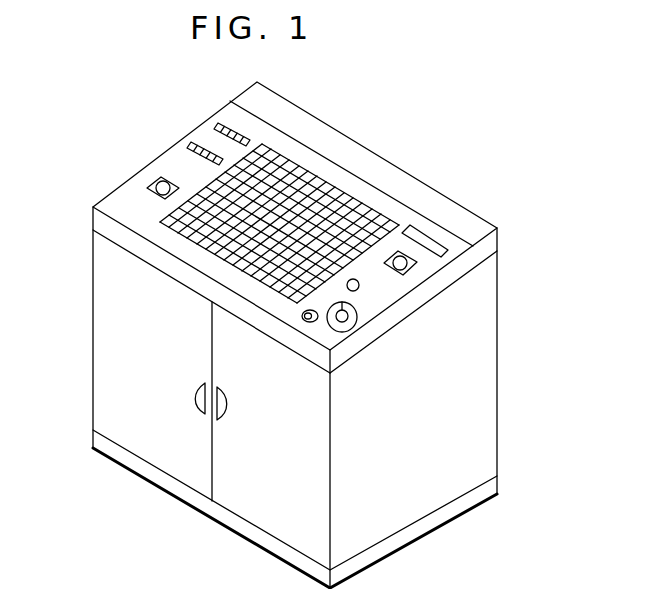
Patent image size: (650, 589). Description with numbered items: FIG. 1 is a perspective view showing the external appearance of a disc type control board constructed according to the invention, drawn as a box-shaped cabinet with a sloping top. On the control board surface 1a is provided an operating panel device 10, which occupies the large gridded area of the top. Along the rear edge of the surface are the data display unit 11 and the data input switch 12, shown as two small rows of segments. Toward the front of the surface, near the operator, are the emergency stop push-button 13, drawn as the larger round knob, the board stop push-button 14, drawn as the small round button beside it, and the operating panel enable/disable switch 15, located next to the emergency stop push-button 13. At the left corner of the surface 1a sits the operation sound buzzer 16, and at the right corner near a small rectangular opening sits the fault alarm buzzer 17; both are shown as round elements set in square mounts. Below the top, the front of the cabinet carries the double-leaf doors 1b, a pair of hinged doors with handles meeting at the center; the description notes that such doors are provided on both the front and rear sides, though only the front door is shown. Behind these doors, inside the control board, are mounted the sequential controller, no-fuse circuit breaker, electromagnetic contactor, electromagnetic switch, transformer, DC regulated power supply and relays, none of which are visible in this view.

The control board surface 1a is at (340, 177).
The double-leaf doors 1b is at (233, 480).
The operating panel device 10 is at (368, 213).
The data display unit 11 is at (220, 126).
The data input switch 12 is at (190, 144).
The emergency stop push-button 13 is at (354, 322).
The board stop push-button 14 is at (360, 287).
The operating panel enable/disable switch 15 is at (318, 320).
The operation sound buzzer 16 is at (160, 194).
The fault alarm buzzer 17 is at (412, 266).